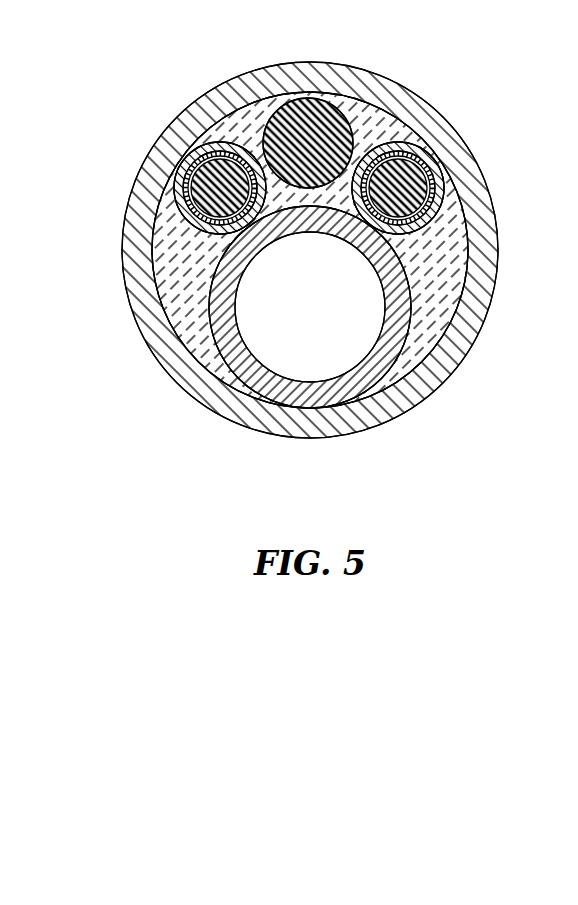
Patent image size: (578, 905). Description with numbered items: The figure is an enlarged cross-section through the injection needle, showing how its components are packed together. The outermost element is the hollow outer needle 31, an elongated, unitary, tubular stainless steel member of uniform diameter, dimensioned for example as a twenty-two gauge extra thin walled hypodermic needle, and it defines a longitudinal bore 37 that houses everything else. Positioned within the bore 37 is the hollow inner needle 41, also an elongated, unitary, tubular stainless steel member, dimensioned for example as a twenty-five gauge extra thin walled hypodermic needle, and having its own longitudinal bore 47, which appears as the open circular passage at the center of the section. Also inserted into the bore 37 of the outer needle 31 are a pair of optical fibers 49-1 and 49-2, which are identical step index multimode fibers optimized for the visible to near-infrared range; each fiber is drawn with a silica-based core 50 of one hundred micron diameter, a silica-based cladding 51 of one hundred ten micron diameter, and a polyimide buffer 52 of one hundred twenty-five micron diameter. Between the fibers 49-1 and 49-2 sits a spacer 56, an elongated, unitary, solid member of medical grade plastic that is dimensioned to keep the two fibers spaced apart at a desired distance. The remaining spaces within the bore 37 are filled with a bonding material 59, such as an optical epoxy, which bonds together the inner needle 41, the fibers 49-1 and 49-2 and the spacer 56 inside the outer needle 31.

The outer needle 31 is at (476, 352).
The longitudinal bore 37 is at (405, 379).
The inner needle 41 is at (413, 292).
The longitudinal bore 47 is at (310, 307).
The optical fiber 49-1 is at (170, 212).
The optical fiber 49-2 is at (452, 212).
The core 50 is at (186, 183).
The cladding 51 is at (202, 160).
The buffer 52 is at (217, 150).
The spacer 56 is at (351, 109).
The bonding material 59 is at (176, 269).